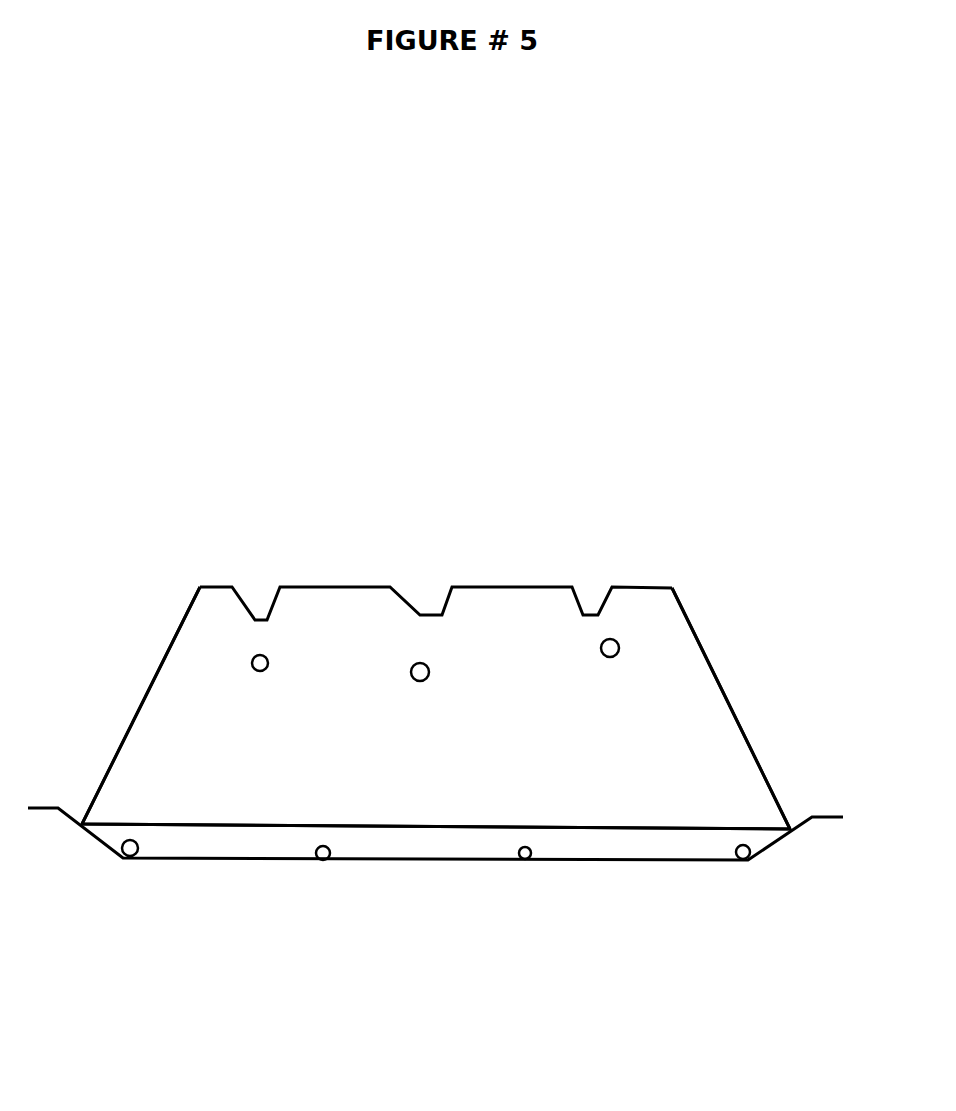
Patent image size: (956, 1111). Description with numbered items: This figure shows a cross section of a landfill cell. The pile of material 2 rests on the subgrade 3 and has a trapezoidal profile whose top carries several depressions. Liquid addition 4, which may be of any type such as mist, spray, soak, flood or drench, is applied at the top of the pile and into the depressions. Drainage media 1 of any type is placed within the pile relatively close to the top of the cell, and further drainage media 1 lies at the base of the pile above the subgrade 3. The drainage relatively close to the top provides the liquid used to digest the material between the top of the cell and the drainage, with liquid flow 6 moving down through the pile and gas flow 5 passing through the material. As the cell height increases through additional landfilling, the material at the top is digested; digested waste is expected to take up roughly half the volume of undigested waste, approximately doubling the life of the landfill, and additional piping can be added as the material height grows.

The drainage media 1 is at (256, 659).
The pile of material 2 is at (436, 708).
The subgrade 3 is at (435, 874).
The liquid addition 4 is at (170, 640).
The gas flow 5 is at (330, 656).
The liquid flow 6 is at (101, 796).